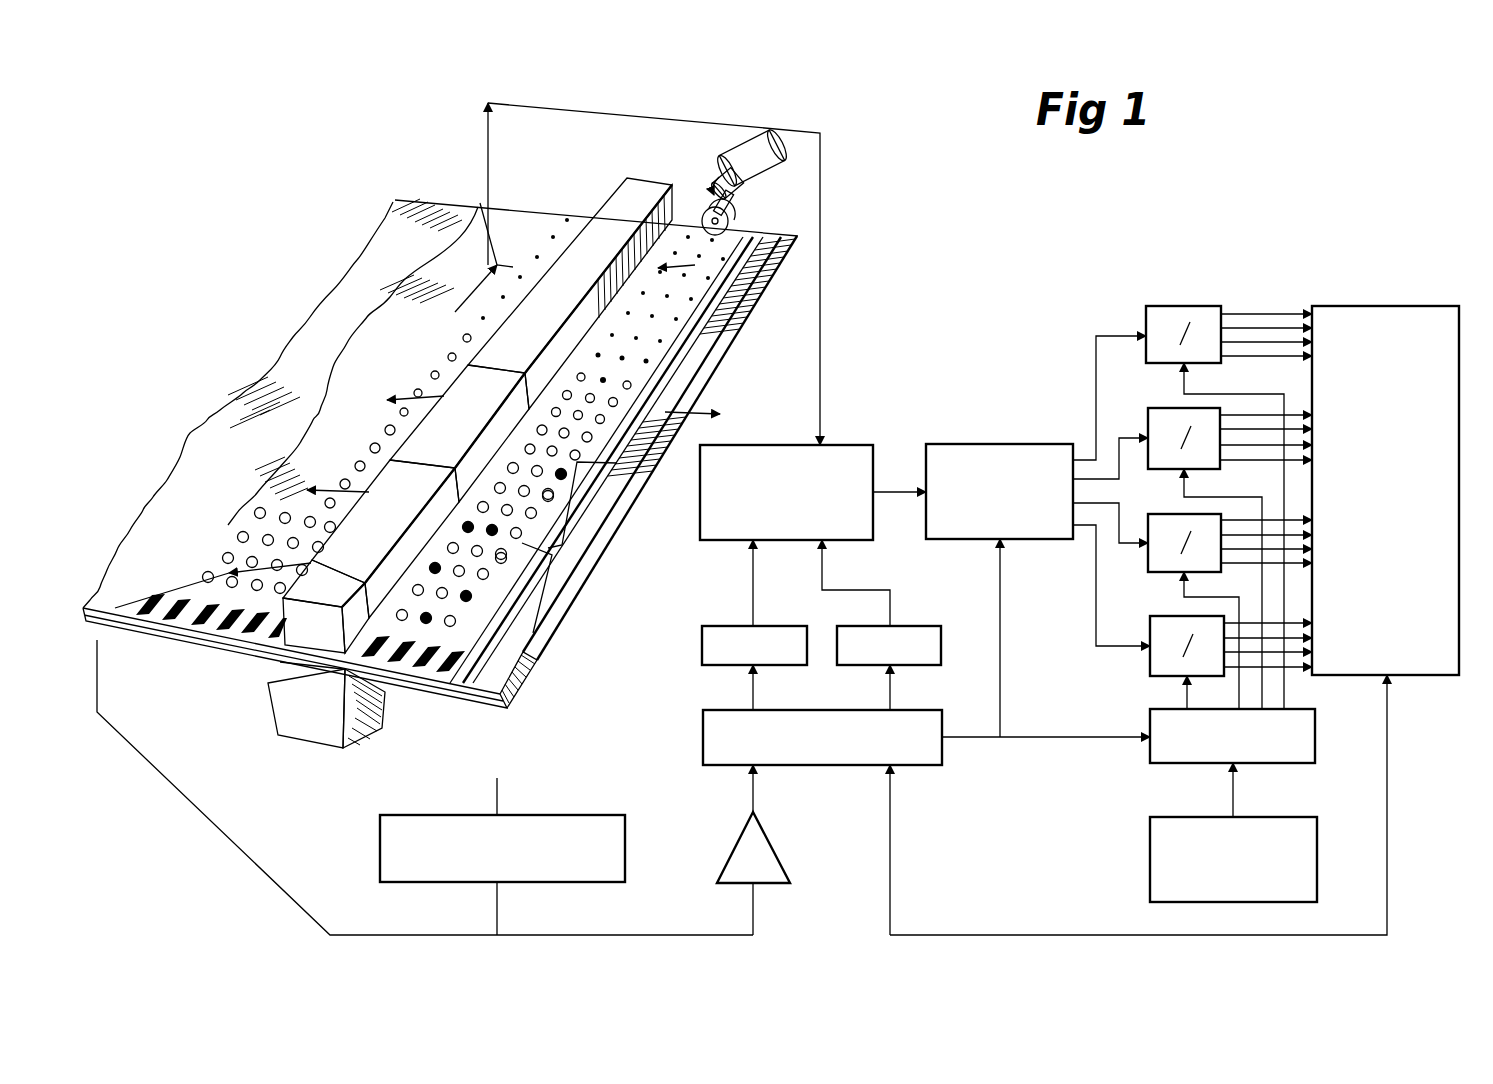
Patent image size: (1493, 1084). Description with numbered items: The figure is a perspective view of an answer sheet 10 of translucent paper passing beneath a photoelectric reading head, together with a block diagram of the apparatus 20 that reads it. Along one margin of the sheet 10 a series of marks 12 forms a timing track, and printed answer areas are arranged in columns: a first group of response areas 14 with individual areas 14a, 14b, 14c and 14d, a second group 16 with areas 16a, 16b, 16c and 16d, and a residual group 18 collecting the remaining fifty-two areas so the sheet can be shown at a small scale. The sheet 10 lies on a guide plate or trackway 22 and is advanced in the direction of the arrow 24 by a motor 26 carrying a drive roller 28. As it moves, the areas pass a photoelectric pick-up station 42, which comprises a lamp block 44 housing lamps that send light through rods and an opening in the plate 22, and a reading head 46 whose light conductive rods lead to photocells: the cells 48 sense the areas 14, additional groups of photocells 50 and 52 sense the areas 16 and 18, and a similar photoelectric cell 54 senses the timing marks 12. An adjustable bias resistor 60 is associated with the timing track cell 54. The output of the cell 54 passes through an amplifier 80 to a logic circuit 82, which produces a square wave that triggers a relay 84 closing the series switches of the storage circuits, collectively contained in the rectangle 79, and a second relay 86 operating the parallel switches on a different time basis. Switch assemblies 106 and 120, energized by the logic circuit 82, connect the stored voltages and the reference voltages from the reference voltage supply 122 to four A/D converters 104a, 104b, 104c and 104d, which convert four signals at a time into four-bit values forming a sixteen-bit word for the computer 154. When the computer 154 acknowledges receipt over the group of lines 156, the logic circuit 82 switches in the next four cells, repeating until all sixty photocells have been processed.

The answer sheet 10 is at (455, 262).
The timing track marks 12 is at (170, 598).
The first group of response areas 14 is at (522, 595).
The response area 14a is at (452, 628).
The response area 14b is at (470, 600).
The response area 14c is at (480, 578).
The response area 14d is at (497, 556).
The second group of response areas 16 is at (578, 512).
The response area 16a is at (514, 533).
The response area 16b is at (518, 548).
The response area 16c is at (553, 496).
The response area 16d is at (558, 472).
The residual group of response areas 18 is at (688, 338).
The apparatus 20 is at (806, 208).
The guide plate 22 is at (385, 218).
The direction arrow 24 is at (685, 408).
The motor 26 is at (742, 160).
The drive roller 28 is at (730, 224).
The photoelectric pick-up station 42 is at (260, 693).
The lamp block 44 is at (296, 737).
The reading head 46 is at (688, 263).
The photo diodes 48 is at (368, 582).
The photocells 50 is at (467, 367).
The photocells 52 is at (535, 378).
The photoelectric cell 54 is at (300, 637).
The adjustable bias resistor 60 is at (618, 815).
The storage circuits rectangle 79 is at (850, 445).
The amplifier 80 is at (792, 855).
The logic circuit 82 is at (942, 765).
The relay 84 is at (706, 628).
The second relay 86 is at (938, 627).
The A/D converter 104a is at (1190, 306).
The A/D converter 104b is at (1160, 408).
The A/D converter 104c is at (1160, 514).
The A/D converter 104d is at (1160, 616).
The switch assembly 106 is at (996, 444).
The switches 120 is at (1150, 762).
The reference voltage supply 122 is at (1150, 886).
The computer 154 is at (1388, 306).
The group of lines 156 is at (1223, 935).